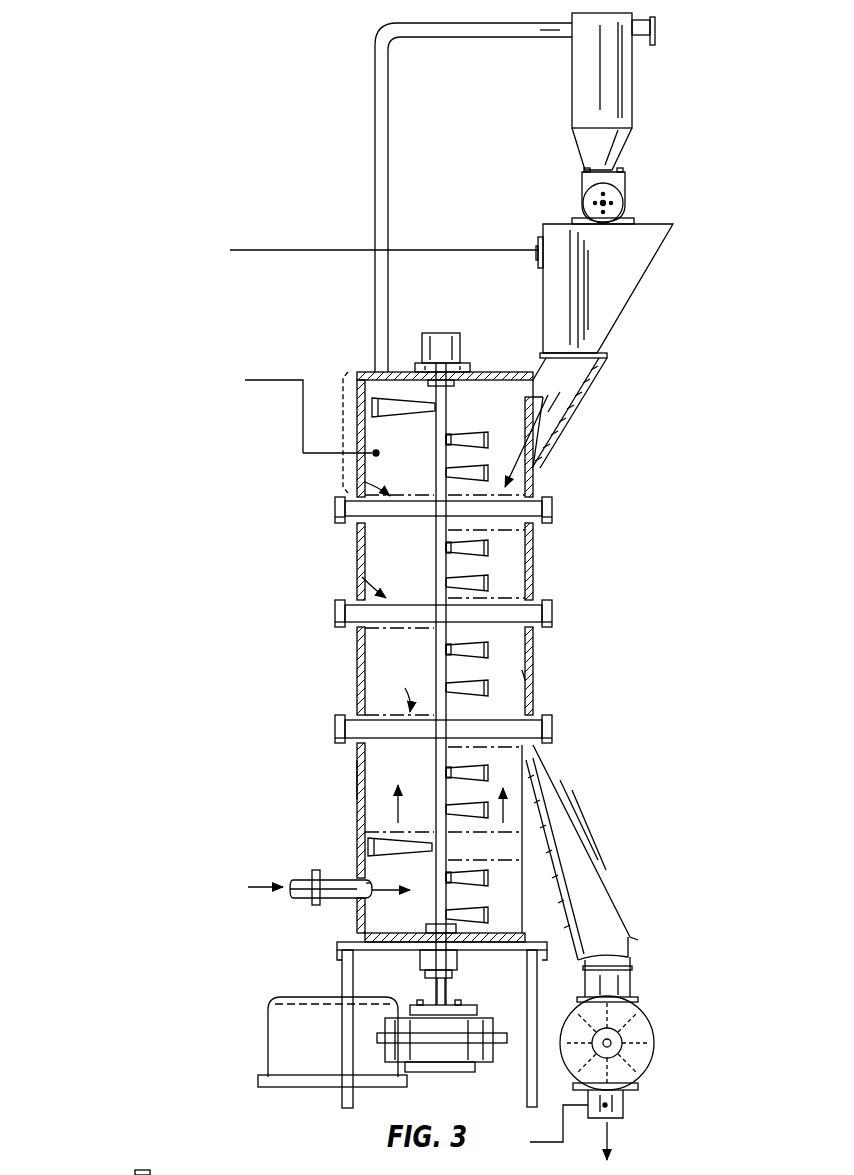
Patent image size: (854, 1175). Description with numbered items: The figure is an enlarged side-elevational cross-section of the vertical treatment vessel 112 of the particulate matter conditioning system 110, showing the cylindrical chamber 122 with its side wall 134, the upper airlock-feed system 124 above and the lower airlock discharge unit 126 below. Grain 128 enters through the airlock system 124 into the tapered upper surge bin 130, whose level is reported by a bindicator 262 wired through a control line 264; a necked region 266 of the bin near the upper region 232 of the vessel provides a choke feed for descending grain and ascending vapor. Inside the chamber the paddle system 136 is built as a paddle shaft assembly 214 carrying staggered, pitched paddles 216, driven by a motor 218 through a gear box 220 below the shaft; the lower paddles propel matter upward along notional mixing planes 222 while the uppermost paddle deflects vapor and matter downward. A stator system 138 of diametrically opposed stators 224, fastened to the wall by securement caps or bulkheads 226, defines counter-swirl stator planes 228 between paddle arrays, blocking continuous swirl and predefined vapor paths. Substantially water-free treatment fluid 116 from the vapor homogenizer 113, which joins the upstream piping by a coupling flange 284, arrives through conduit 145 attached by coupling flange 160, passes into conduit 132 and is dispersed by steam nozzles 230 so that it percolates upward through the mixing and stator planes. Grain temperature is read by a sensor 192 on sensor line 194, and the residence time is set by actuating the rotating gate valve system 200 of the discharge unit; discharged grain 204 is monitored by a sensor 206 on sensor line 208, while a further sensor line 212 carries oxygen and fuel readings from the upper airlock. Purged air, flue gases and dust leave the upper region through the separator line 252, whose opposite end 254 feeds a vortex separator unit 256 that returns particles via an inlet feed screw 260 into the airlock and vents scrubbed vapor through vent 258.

The particulate matter conditioning system 110 is at (592, 585).
The vertical treatment vessel 112 is at (545, 658).
The vapor homogenizer 113 is at (735, 1164).
The treatment fluid 116 is at (524, 815).
The cylindrical chamber 122 is at (356, 771).
The upper airlock-feed system 124 is at (632, 193).
The lower airlock discharge unit 126 is at (652, 1015).
The grain 128 is at (546, 446).
The upper surge bin 130 is at (628, 291).
The conduit 132 is at (316, 878).
The side wall 134 is at (352, 946).
The paddle system 136 is at (464, 330).
The stator system 138 is at (332, 505).
The conduit 145 is at (310, 900).
The coupling flange 160 is at (315, 905).
The sensor 192 is at (378, 452).
The sensor line 194 is at (305, 398).
The rotating gate valve system 200 is at (645, 1058).
The discharged grain 204 is at (612, 1136).
The sensor 206 is at (625, 1106).
The sensor line 208 is at (548, 1150).
The sensor line 212 is at (434, 577).
The paddle shaft assembly 214 is at (526, 676).
The paddles 216 is at (402, 405).
The motor 218 is at (310, 1070).
The gear box 220 is at (487, 1072).
The notional mixing planes 222 is at (510, 838).
The stators 224 is at (403, 520).
The securement caps or bulkheads 226 is at (335, 520).
The notional stator plane 228 is at (365, 482).
The steam nozzles 230 is at (372, 882).
The upper region 232 is at (346, 430).
The separator line 252 is at (375, 197).
The opposite end 254 is at (548, 38).
The vortex separator unit 256 is at (632, 90).
The vent 258 is at (656, 32).
The inlet feed screw 260 is at (625, 180).
The bindicator 262 is at (537, 247).
The control line 264 is at (437, 249).
The necked region 266 is at (566, 410).
The coupling flange 284 is at (140, 1170).